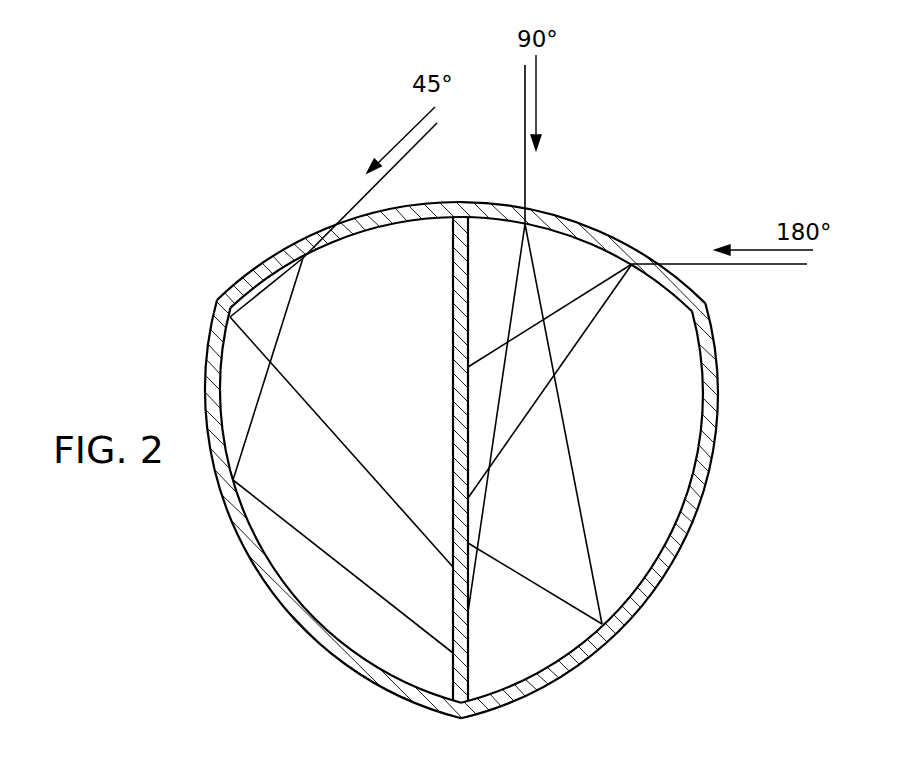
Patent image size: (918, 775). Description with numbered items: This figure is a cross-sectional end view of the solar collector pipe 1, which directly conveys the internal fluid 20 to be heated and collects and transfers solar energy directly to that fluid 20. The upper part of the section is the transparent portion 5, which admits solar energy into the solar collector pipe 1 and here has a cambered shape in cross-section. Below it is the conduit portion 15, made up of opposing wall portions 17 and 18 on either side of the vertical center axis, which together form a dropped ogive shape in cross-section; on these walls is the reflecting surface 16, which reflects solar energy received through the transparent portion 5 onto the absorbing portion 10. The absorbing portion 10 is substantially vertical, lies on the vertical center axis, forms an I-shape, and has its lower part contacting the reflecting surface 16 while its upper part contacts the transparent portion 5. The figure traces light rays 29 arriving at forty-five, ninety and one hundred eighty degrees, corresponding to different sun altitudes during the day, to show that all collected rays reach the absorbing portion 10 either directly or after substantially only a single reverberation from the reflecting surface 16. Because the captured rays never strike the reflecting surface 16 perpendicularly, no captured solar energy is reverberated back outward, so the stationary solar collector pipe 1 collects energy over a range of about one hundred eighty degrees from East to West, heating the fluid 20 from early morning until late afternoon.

The solar collector pipe 1 is at (199, 289).
The transparent portion 5 is at (297, 243).
The absorbing portion 10 is at (452, 418).
The conduit portion 15 is at (209, 552).
The reflecting surface 16 is at (257, 545).
The opposing wall portion 17 is at (270, 587).
The opposing wall portion 18 is at (700, 495).
The internal fluid 20 is at (366, 515).
The light rays 29 is at (525, 180).